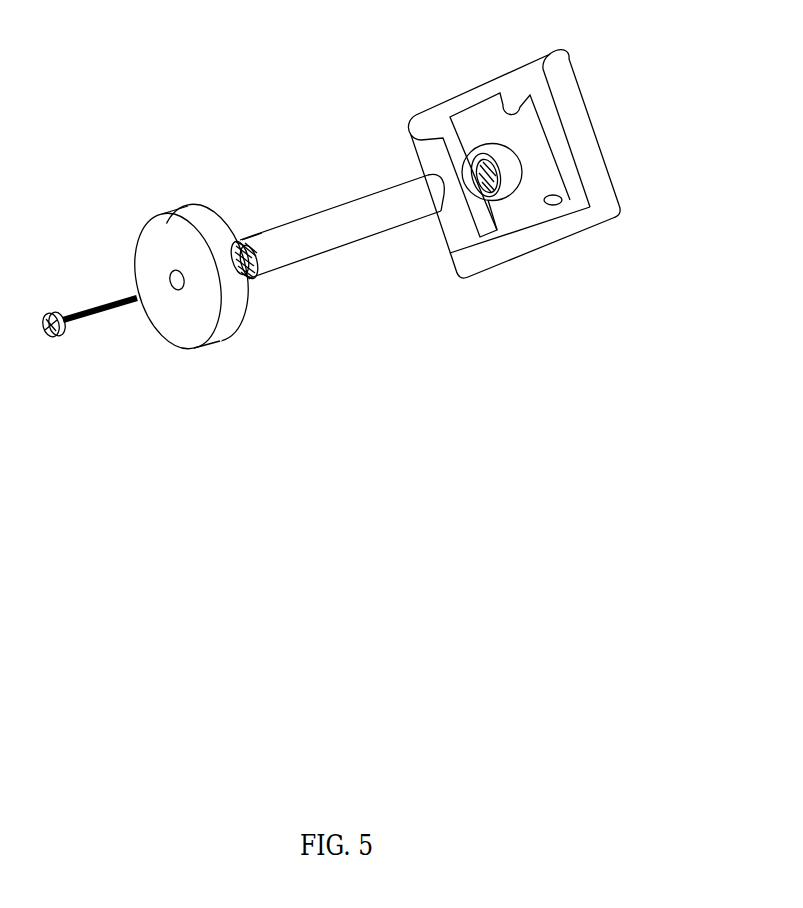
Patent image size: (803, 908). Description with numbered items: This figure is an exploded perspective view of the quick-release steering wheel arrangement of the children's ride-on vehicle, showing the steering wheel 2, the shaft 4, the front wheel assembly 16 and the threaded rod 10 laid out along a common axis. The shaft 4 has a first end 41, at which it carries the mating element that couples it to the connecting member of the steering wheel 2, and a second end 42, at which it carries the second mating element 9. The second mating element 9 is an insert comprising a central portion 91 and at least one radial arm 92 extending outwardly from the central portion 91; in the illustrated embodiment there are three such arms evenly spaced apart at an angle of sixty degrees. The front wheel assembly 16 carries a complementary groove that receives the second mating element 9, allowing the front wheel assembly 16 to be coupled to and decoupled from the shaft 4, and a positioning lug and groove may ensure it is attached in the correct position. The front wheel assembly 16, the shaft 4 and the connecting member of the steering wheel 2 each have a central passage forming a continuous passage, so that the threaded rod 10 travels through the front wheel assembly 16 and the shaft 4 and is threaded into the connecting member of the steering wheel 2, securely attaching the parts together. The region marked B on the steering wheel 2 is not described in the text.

The steering wheel 2 is at (555, 175).
The shaft hole boss B is at (522, 172).
The shaft 4 is at (360, 236).
The first end 41 is at (433, 200).
The second end 42 is at (258, 261).
The second mating element 9 is at (261, 263).
The central portion 91 is at (247, 280).
The radial arm 92 is at (252, 277).
The front wheel assembly 16 is at (178, 243).
The threaded rod 10 is at (97, 305).